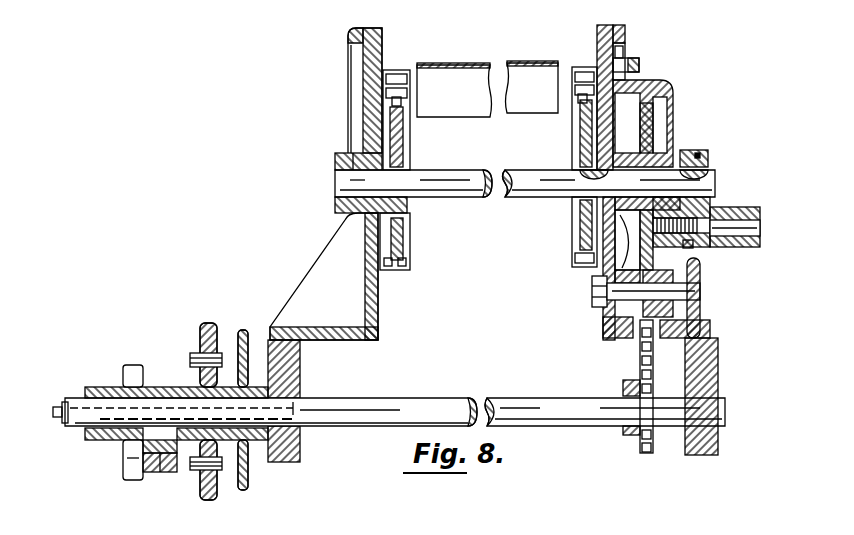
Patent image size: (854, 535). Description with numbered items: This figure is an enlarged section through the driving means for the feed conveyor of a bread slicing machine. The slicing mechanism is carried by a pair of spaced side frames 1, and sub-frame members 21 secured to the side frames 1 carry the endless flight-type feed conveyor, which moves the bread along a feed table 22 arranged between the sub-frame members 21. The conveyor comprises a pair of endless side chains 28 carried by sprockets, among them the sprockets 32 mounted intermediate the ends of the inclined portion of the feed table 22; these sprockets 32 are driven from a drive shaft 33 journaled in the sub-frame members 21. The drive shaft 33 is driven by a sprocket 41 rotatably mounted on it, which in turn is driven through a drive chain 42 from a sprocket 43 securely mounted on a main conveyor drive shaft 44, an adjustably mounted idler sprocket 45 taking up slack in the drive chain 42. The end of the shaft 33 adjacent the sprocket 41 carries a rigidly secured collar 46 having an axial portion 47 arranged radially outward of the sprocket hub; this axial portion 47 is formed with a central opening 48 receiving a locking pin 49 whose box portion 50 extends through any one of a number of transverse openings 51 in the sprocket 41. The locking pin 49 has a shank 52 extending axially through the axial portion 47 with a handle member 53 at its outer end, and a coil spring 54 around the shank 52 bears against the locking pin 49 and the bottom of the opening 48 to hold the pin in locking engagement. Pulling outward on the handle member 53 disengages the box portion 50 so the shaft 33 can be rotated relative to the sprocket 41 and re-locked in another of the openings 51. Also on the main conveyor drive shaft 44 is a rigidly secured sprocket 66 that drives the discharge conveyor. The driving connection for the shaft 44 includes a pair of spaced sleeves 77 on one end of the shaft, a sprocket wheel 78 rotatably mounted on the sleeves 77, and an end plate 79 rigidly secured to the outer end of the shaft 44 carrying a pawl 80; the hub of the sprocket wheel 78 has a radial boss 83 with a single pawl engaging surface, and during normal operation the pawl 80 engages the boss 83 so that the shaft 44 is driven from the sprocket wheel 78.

The side frames 1 is at (718, 441).
The sub-frame members 21 is at (347, 37).
The feed table 22 is at (465, 55).
The side chains 28 is at (402, 95).
The sprockets 32 is at (398, 137).
The drive shaft 33 is at (527, 198).
The sprocket 41 is at (668, 118).
The drive chain 42 is at (640, 355).
The sprocket 43 is at (634, 437).
The main conveyor drive shaft 44 is at (502, 398).
The idler sprocket 45 is at (700, 312).
The collar 46 is at (700, 150).
The axial portion 47 is at (714, 212).
The central opening 48 is at (685, 240).
The locking pin 49 is at (608, 266).
The box portion 50 is at (622, 240).
The transverse openings 51 is at (648, 137).
The shank 52 is at (720, 213).
The handle member 53 is at (753, 213).
The coil spring 54 is at (690, 247).
The sprocket 66 is at (265, 365).
The sleeves 77 is at (163, 382).
The sprocket wheel 78 is at (210, 344).
The end plate 79 is at (127, 459).
The pawl 80 is at (157, 475).
The radial boss 83 is at (167, 473).